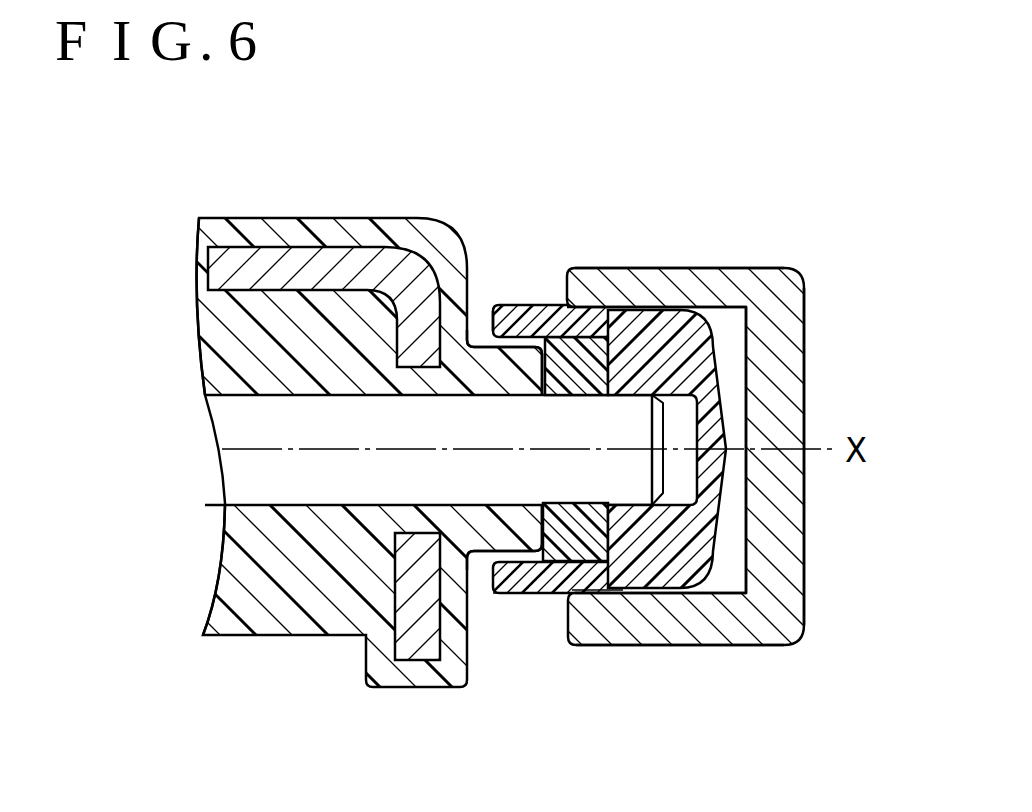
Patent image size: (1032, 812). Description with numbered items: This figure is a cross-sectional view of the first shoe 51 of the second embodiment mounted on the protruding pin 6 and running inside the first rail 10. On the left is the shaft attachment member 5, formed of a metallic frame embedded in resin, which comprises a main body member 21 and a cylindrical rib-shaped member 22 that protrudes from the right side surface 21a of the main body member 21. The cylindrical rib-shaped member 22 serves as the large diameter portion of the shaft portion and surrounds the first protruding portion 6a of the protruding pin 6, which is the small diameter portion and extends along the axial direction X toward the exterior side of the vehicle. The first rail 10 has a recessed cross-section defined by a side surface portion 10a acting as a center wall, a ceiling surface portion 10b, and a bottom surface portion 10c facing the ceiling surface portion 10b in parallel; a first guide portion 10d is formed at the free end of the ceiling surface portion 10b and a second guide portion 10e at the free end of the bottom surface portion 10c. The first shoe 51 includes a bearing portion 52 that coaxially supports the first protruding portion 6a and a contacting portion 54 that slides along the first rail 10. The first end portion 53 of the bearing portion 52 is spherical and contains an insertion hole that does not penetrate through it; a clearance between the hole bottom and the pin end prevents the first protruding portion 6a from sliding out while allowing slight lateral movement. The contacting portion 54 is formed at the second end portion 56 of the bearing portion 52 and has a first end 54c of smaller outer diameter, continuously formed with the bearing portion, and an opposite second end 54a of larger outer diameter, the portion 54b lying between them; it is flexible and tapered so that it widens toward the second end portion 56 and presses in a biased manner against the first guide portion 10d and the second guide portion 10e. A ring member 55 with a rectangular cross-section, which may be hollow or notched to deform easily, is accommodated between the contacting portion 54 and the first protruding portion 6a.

The shaft attachment member 5 is at (320, 213).
The main body member 21 is at (274, 627).
The side surface 21a is at (488, 298).
The cylindrical rib-shaped member 22 is at (487, 397).
The protruding pin 6 is at (543, 426).
The first protruding portion 6a is at (645, 477).
The first shoe 51 is at (510, 287).
The first rail 10 is at (618, 440).
The side surface portion 10a is at (778, 343).
The ceiling surface portion 10b is at (720, 268).
The bottom surface portion 10c is at (730, 637).
The first guide portion 10d is at (547, 312).
The second guide portion 10e is at (545, 592).
The first end portion 53 is at (722, 412).
The ring member 55 is at (585, 352).
The bearing portion 52 is at (687, 592).
The contacting portion 54 is at (497, 600).
The second end 54a is at (490, 597).
The second lip portion 54b is at (530, 597).
The first end 54c is at (615, 592).
The second end portion 56 is at (630, 592).